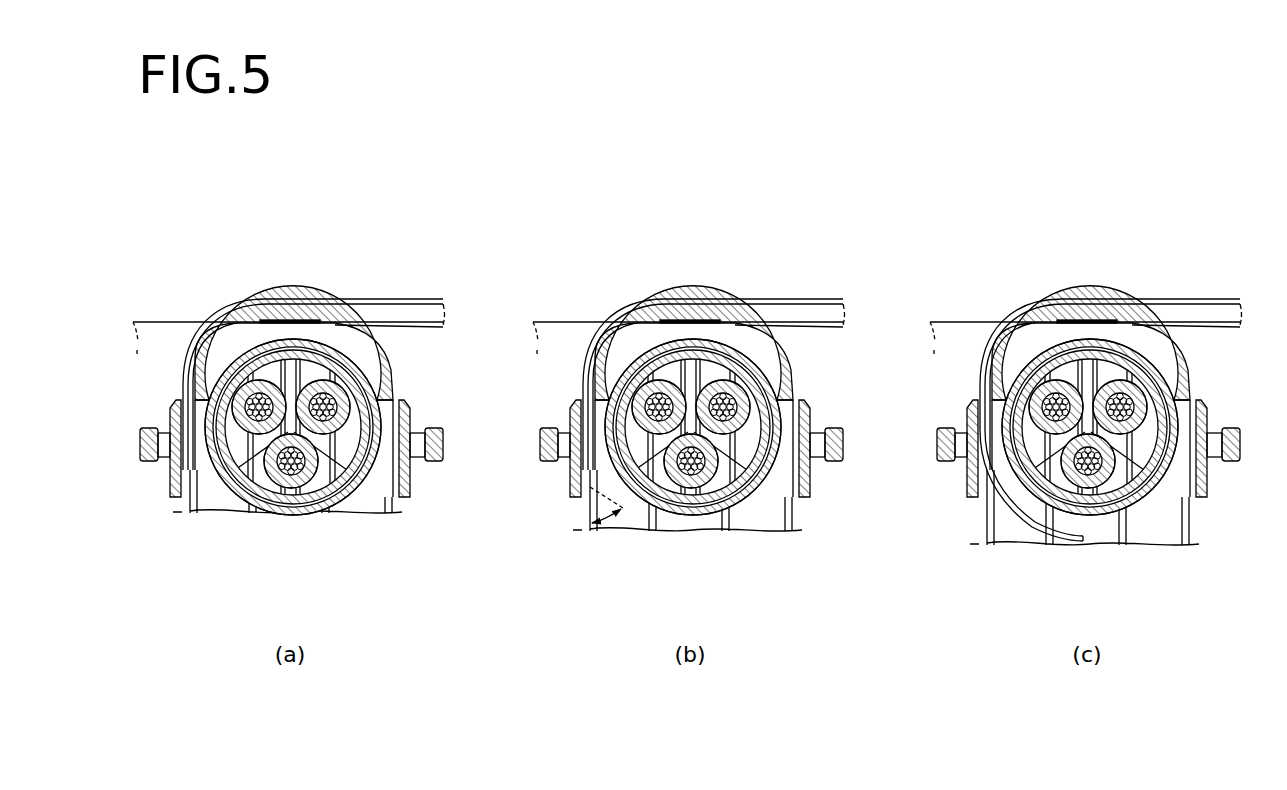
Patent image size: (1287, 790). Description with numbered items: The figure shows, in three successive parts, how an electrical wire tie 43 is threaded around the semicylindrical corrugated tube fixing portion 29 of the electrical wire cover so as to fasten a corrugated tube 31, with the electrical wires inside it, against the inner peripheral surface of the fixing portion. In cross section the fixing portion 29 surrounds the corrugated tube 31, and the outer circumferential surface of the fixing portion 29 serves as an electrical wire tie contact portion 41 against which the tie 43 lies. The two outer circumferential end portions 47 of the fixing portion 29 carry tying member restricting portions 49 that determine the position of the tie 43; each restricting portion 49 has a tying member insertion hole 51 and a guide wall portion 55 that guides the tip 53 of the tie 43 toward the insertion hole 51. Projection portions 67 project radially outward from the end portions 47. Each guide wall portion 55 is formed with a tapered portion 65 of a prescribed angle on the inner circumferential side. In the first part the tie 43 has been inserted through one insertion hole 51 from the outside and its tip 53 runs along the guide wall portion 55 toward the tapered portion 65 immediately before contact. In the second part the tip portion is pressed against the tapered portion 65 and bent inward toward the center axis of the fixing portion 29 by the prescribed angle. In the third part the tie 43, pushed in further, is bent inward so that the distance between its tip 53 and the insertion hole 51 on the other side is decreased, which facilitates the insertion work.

The corrugated tube fixing portion 29 is at (385, 334).
The corrugated tube 31 is at (208, 378).
The electrical wire tie contact portion 41 is at (310, 320).
The electrical wire tie 43 is at (371, 296).
The outer circumferential end portion 47 is at (178, 397).
The tying member restricting portion 49 is at (165, 393).
The tying member insertion hole 51 is at (182, 345).
The tip 53 is at (192, 470).
The guide wall portion 55 is at (176, 409).
The tapered portion 65 is at (197, 483).
The projection portion 67 is at (141, 444).